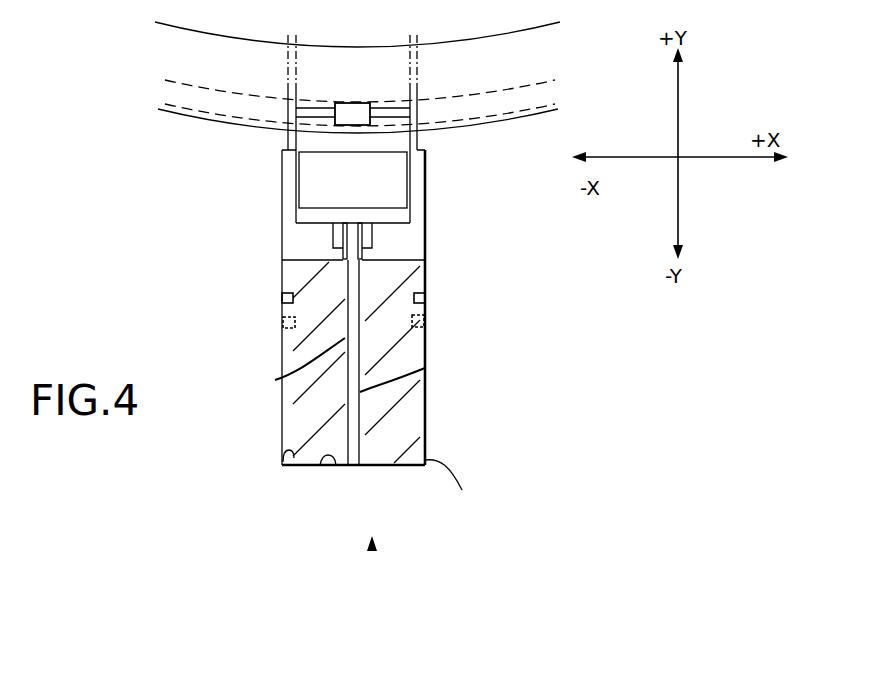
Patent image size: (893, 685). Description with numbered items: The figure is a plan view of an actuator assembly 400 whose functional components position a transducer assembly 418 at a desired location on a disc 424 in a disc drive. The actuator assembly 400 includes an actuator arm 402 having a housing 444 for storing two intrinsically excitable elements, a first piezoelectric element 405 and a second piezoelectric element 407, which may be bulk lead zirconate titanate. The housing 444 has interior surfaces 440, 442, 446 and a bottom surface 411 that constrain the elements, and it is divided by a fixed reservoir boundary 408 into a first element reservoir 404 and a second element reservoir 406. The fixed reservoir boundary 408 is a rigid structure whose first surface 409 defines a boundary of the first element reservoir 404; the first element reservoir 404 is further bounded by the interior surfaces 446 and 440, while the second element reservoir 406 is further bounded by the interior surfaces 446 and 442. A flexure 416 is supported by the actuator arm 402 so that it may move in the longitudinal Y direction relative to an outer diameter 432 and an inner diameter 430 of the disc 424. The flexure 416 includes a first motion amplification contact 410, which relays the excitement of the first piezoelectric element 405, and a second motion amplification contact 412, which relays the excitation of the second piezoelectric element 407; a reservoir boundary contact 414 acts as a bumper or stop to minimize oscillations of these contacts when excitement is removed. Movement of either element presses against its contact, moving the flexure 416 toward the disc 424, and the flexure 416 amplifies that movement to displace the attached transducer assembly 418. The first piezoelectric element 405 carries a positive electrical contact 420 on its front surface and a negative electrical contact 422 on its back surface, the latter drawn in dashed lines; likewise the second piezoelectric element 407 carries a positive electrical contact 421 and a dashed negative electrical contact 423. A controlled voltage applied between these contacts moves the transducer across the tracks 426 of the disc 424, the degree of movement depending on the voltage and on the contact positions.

The actuator assembly 400 is at (478, 410).
The actuator arm 402 is at (425, 388).
The first element reservoir 404 is at (403, 484).
The first piezoelectric element 405 is at (425, 422).
The second element reservoir 406 is at (293, 484).
The second piezoelectric element 407 is at (308, 433).
The fixed reservoir boundary 408 is at (360, 467).
The first surface 409 is at (425, 368).
The first motion amplification contact 410 is at (425, 240).
The bottom surface 411 is at (275, 380).
The second motion amplification contact 412 is at (333, 237).
The reservoir boundary contact 414 is at (350, 250).
The flexure 416 is at (426, 146).
The transducer assembly 418 is at (388, 80).
The positive electrical contact 420 is at (425, 295).
The positive electrical contact 421 is at (282, 304).
The negative electrical contact 422 is at (425, 317).
The negative electrical contact 423 is at (283, 322).
The disc 424 is at (124, 124).
The tracks 426 is at (188, 104).
The inner diameter 430 is at (184, 40).
The outer diameter 432 is at (199, 121).
The interior surface 440 is at (464, 485).
The interior surface 442 is at (288, 468).
The housing 444 is at (372, 545).
The interior surface 446 is at (323, 466).